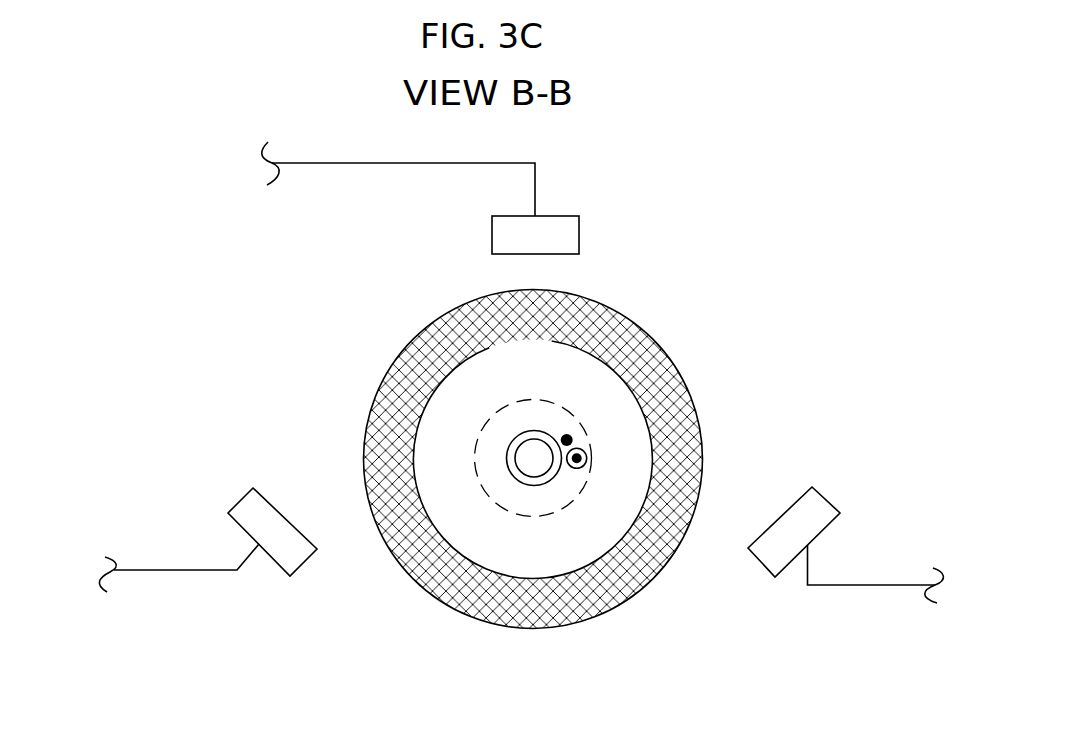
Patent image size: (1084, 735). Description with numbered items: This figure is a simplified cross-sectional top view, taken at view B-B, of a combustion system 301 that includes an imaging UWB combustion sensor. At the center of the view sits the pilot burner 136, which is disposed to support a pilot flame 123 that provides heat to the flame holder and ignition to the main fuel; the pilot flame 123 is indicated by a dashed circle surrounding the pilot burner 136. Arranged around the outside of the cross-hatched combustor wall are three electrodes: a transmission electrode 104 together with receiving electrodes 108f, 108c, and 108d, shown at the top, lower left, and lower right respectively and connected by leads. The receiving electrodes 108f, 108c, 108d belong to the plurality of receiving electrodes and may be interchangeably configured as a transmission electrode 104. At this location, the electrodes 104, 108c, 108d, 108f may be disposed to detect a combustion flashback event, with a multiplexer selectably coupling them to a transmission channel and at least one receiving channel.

The combustion system 301 is at (629, 440).
The transmission electrode 104 is at (521, 376).
The receiving electrode 108f is at (580, 236).
The receiving electrode 108c is at (303, 563).
The receiving electrode 108d is at (828, 502).
The pilot flame 123 is at (526, 402).
The pilot burner 136 is at (542, 487).